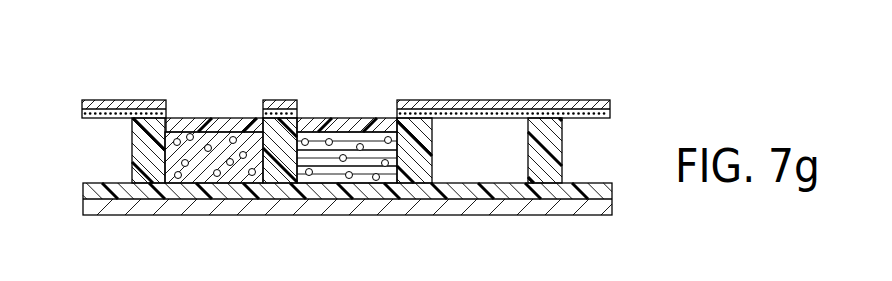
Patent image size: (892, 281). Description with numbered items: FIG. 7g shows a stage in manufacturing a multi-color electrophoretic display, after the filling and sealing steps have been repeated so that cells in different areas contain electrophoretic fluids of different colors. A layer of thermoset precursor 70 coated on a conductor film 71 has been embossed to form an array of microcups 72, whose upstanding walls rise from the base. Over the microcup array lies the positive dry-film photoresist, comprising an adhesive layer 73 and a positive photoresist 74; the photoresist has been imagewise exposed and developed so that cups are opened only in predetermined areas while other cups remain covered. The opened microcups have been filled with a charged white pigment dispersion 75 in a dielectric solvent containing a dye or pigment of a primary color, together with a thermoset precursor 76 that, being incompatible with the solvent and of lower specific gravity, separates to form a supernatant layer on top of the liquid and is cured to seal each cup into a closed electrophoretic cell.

The thermoset precursor layer 70 is at (555, 152).
The conductor film 71 is at (540, 210).
The array of microcups 72 is at (470, 122).
The adhesive layer 73 is at (103, 113).
The positive photoresist 74 is at (103, 104).
The charged white pigment dispersion 75 is at (190, 177).
The thermoset precursor 76 is at (202, 122).